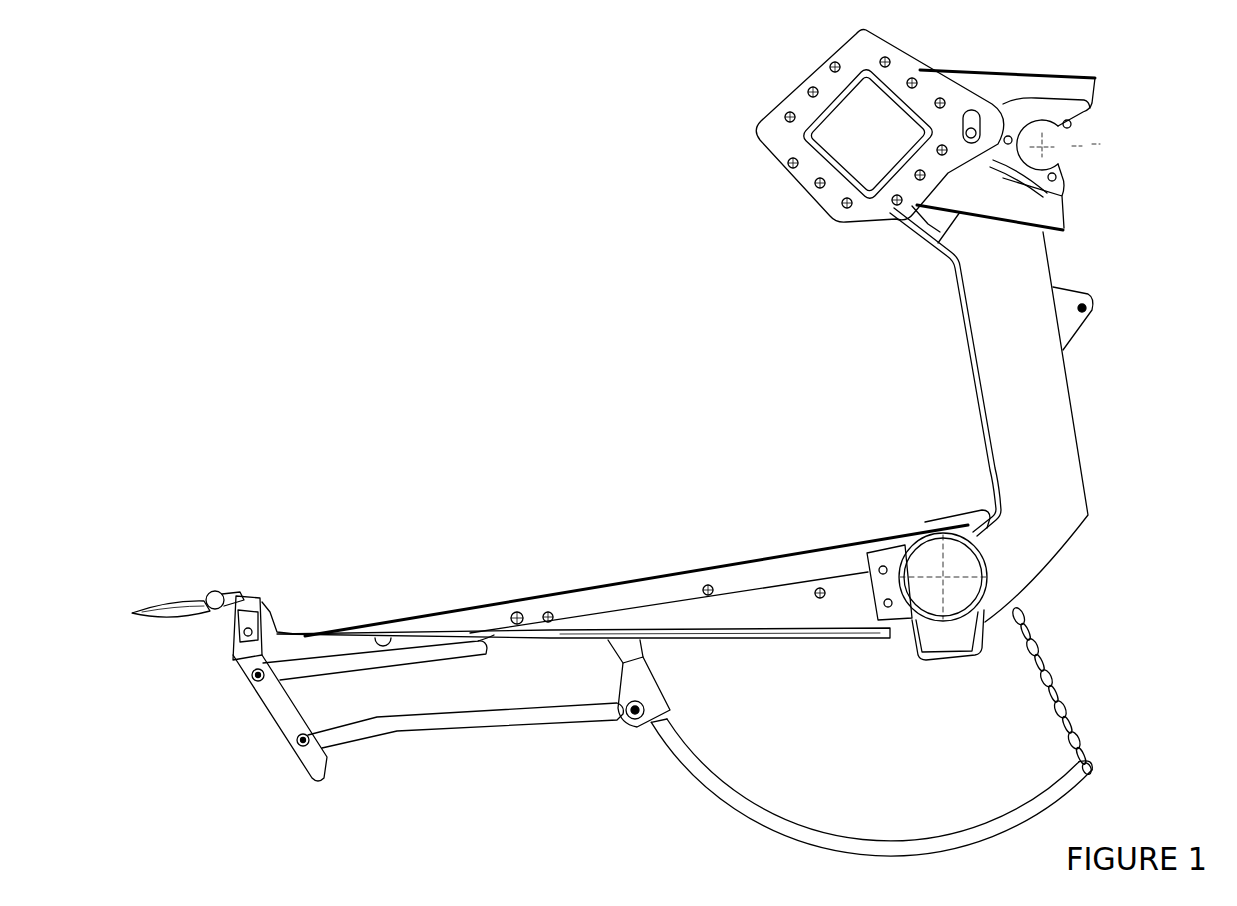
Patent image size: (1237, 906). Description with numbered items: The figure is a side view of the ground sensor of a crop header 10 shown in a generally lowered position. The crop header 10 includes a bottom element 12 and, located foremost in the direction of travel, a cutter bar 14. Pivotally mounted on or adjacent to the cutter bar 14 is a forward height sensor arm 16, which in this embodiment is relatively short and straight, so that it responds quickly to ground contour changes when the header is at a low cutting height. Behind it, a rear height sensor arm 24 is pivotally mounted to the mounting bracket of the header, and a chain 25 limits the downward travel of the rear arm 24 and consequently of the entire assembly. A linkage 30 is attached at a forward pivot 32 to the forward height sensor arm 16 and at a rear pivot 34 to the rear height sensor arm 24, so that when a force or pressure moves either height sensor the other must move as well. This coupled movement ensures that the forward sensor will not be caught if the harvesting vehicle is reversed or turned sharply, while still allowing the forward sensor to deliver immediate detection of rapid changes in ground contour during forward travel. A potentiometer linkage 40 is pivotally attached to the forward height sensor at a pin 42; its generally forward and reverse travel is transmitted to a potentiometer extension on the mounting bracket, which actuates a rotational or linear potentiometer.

The crop header 10 is at (946, 363).
The bottom element 12 is at (750, 587).
The cutter bar 14 is at (172, 600).
The forward height sensor arm 16 is at (280, 710).
The rear height sensor arm 24 is at (813, 843).
The chain 25 is at (1053, 677).
The linkage 30 is at (510, 717).
The forward pivot 32 is at (295, 744).
The rear pivot 34 is at (633, 720).
The potentiometer linkage 40 is at (320, 668).
The pin 42 is at (250, 675).